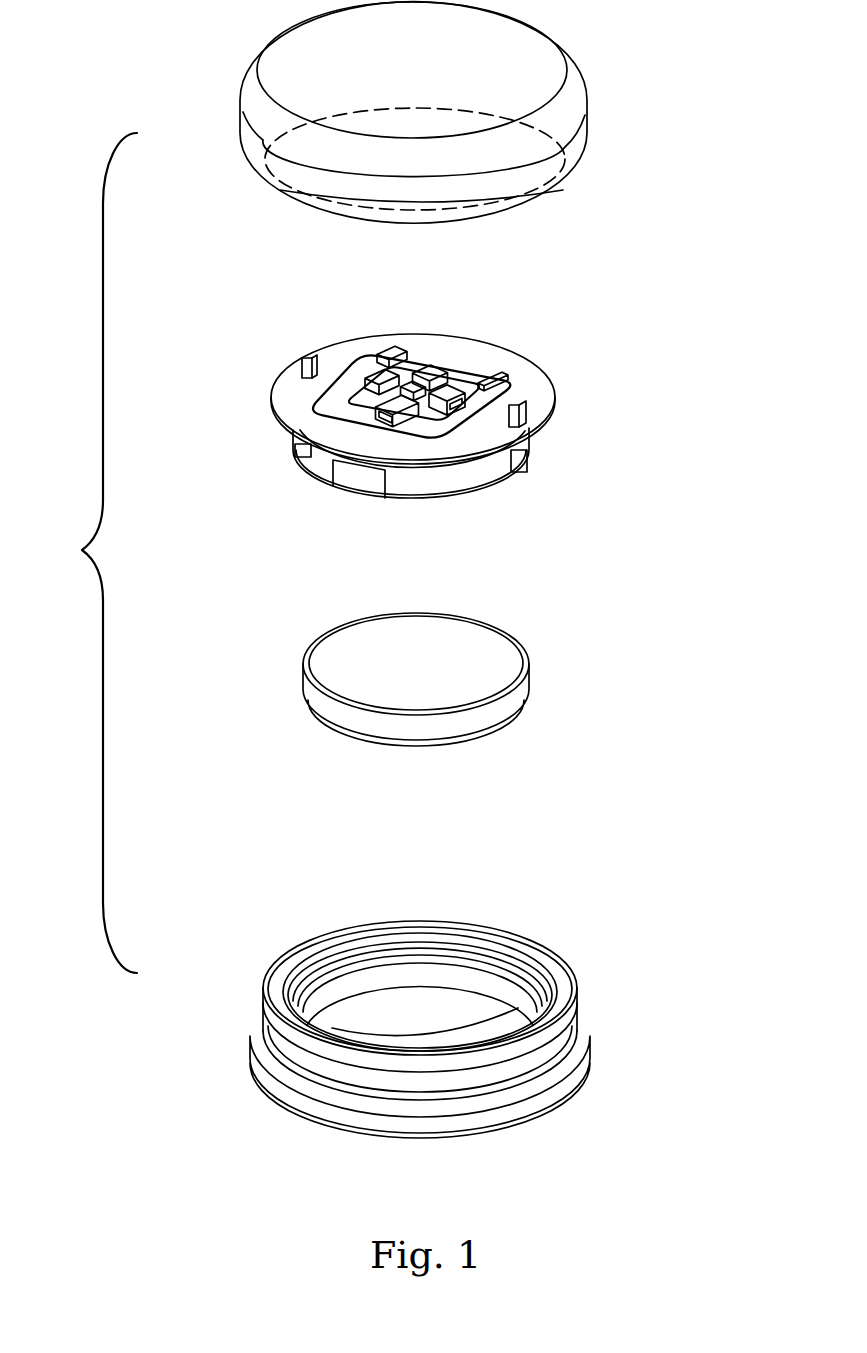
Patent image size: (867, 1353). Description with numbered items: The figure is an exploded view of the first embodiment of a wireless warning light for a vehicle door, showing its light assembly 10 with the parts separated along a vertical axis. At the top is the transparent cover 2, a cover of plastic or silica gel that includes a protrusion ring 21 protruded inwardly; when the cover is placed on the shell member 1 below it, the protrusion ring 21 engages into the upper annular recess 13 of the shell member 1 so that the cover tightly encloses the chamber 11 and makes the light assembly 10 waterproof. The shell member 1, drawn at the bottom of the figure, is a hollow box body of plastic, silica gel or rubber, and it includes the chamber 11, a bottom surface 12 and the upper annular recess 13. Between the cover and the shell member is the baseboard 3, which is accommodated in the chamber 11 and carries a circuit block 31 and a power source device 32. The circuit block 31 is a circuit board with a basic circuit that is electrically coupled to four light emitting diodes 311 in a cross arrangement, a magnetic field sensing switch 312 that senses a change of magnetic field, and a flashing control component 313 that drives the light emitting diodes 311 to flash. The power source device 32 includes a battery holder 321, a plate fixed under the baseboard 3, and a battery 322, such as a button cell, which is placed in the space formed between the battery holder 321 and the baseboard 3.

The shell member 1 is at (585, 924).
The light assembly 10 is at (90, 553).
The chamber 11 is at (470, 980).
The bottom surface 12 is at (552, 1108).
The upper annular recess 13 is at (487, 1092).
The transparent cover 2 is at (570, 145).
The protrusion ring 21 is at (300, 187).
The baseboard 3 is at (527, 368).
The circuit block 31 is at (365, 363).
The light emitting diode 311 is at (433, 370).
The magnetic field sensing switch 312 is at (413, 387).
The flashing control component 313 is at (388, 348).
The power source device 32 is at (552, 512).
The battery holder 321 is at (478, 490).
The battery 322 is at (520, 697).